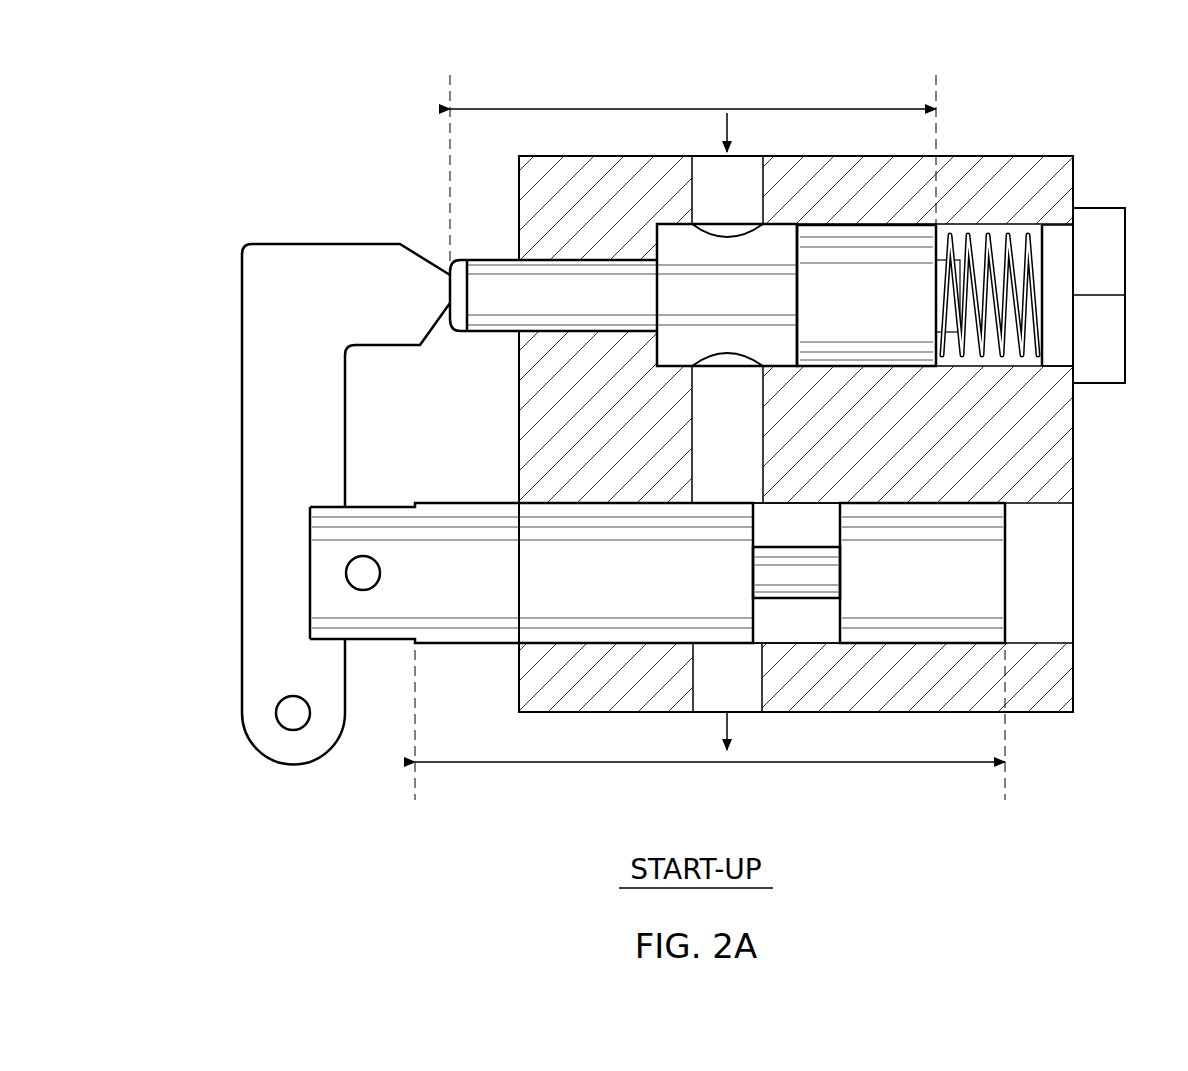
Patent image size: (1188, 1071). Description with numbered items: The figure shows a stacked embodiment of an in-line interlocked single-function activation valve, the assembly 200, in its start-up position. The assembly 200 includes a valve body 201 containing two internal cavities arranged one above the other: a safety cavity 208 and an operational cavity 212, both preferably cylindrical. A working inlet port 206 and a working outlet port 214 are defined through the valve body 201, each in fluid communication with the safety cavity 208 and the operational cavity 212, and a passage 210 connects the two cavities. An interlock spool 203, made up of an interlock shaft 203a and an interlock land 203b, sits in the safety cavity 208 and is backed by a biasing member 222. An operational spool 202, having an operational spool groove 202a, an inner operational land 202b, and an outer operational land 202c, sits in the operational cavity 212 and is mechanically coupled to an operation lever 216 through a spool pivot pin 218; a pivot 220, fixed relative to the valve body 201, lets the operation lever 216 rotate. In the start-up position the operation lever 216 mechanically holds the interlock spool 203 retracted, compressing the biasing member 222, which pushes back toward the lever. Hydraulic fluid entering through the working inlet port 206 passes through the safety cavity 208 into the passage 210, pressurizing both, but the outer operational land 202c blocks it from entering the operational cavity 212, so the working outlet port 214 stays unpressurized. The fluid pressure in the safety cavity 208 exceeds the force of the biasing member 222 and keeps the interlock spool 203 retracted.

The assembly 200 is at (1040, 72).
The valve body 201 is at (590, 205).
The operational spool 202 is at (732, 667).
The operational spool groove 202a is at (822, 578).
The inner operational land 202b is at (985, 574).
The outer operational land 202c is at (565, 590).
The interlock spool 203 is at (693, 203).
The interlock shaft 203a is at (768, 295).
The interlock land 203b is at (862, 290).
The working inlet port 206 is at (752, 185).
The safety cavity 208 is at (661, 240).
The passage 210 is at (727, 412).
The operational cavity 212 is at (787, 622).
The working outlet port 214 is at (736, 699).
The operation lever 216 is at (287, 300).
The spool pivot pin 218 is at (363, 573).
The pivot 220 is at (293, 713).
The biasing member 222 is at (1025, 230).